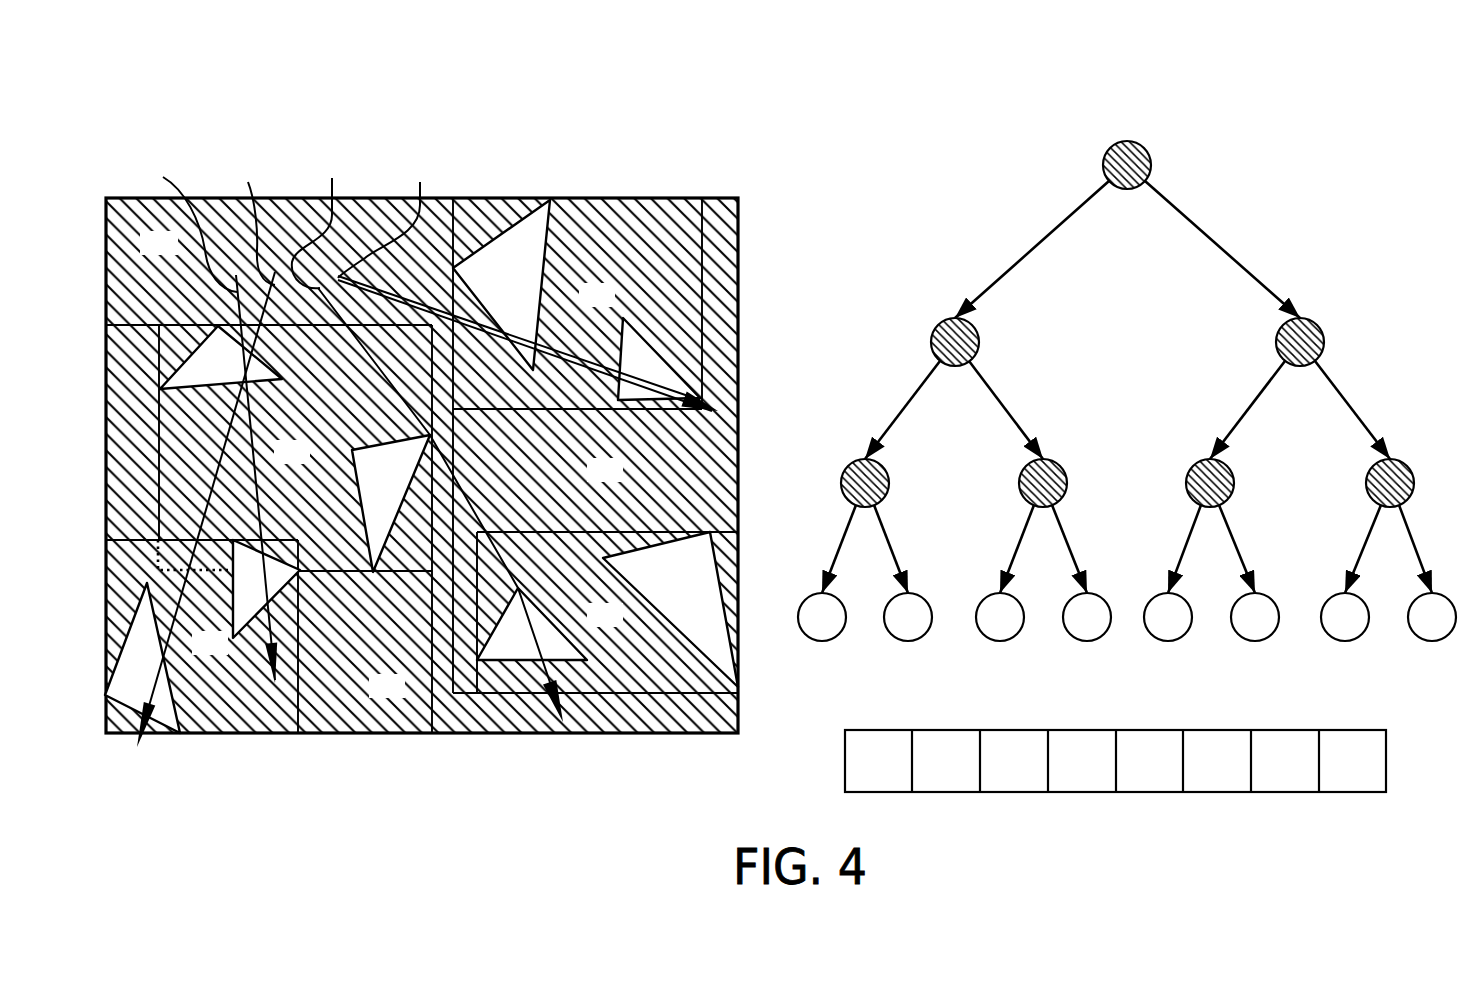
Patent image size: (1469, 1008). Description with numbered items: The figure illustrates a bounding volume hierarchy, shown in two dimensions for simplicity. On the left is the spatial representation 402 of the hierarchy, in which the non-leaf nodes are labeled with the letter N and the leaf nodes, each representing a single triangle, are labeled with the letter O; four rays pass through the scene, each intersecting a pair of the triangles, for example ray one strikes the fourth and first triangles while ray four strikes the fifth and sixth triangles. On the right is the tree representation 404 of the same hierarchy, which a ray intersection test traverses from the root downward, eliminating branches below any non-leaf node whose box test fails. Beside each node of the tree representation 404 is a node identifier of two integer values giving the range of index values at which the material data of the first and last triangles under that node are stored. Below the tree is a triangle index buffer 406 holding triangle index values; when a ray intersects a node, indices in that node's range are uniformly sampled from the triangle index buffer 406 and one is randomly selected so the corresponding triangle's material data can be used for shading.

The spatial representation 402 is at (292, 120).
The tree representation 404 is at (895, 173).
The triangle index buffer 406 is at (1386, 792).